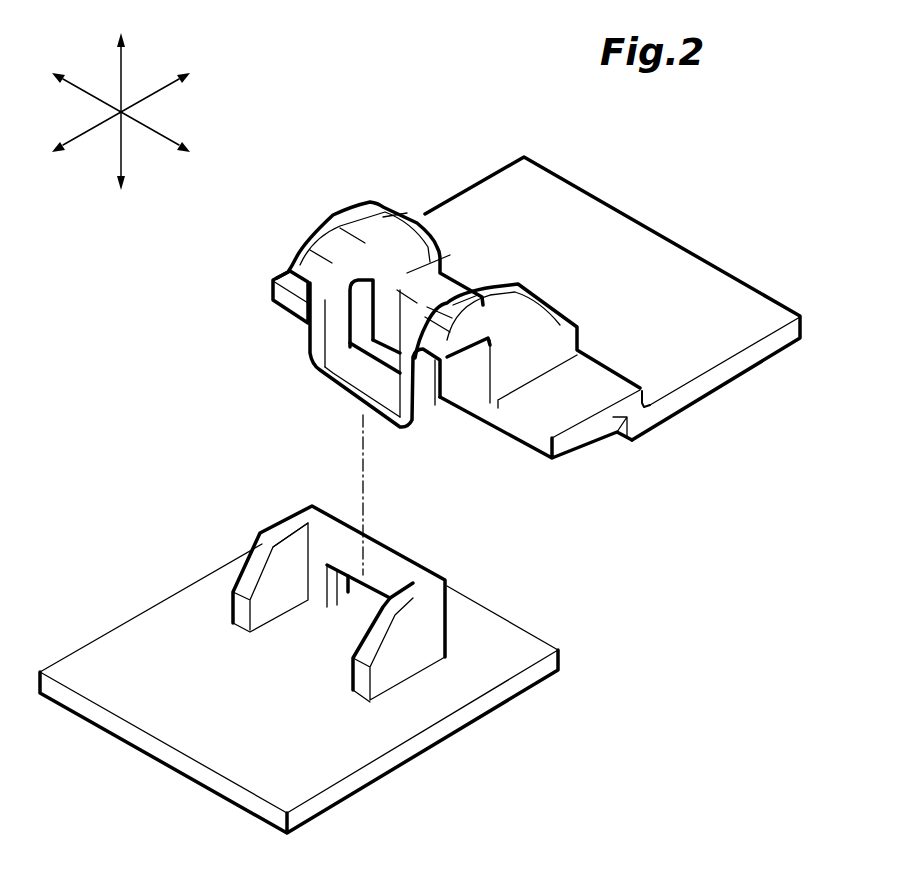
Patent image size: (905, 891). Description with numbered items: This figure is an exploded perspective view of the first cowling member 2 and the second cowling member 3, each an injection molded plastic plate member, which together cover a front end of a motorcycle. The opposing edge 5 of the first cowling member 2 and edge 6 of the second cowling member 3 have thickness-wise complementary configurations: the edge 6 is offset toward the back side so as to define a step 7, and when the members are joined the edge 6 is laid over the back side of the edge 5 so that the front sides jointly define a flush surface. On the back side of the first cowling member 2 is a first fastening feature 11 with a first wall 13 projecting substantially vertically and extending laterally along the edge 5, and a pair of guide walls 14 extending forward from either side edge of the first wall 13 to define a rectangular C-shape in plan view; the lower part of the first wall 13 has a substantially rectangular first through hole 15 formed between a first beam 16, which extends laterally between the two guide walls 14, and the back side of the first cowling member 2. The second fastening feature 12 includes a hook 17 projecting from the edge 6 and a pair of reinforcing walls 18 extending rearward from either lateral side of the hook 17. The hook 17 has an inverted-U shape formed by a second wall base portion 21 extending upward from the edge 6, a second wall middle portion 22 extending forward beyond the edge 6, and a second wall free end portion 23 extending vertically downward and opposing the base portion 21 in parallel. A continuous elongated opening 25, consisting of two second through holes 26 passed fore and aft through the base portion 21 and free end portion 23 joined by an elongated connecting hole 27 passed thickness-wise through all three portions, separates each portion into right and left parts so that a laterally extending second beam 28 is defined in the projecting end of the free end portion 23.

The first cowling member 2 is at (107, 653).
The second cowling member 3 is at (685, 270).
The edge of first cowling member 5 is at (513, 645).
The edge of second cowling member 6 is at (560, 410).
The step 7 is at (653, 402).
The first fastening feature 11 is at (279, 506).
The second fastening feature 12 is at (367, 192).
The first wall 13 is at (380, 553).
The guide walls 14 is at (252, 575).
The first through hole 15 is at (336, 598).
The first beam 16 is at (347, 518).
The hook 17 is at (300, 371).
The reinforcing walls 18 is at (398, 232).
The second wall base portion 21 is at (396, 308).
The second wall middle portion 22 is at (350, 248).
The second wall free end portion 23 is at (310, 348).
The opening 25 is at (355, 378).
The second through holes 26 is at (332, 325).
The connecting hole 27 is at (330, 256).
The second beam 28 is at (384, 413).